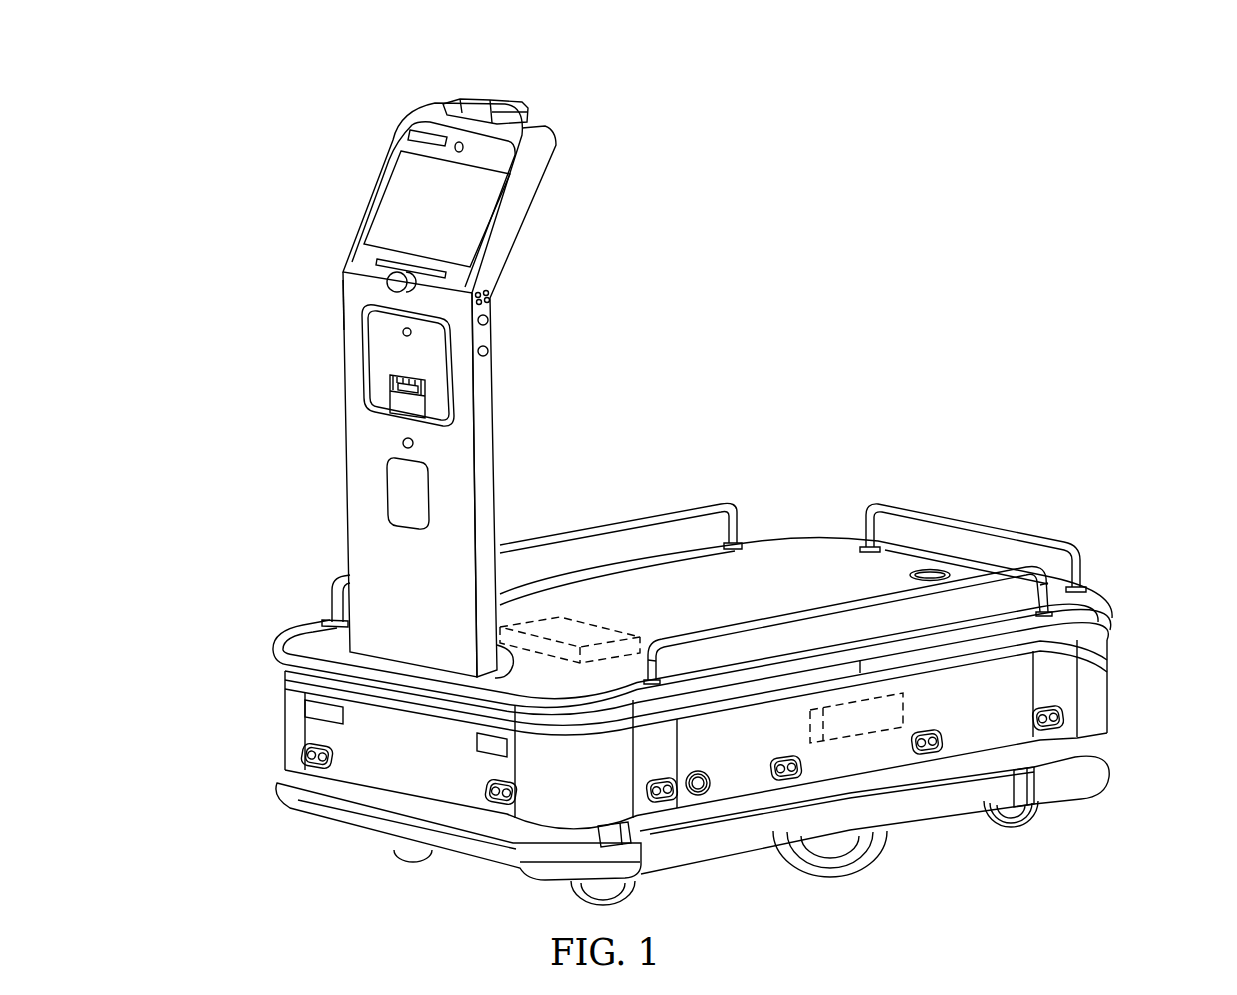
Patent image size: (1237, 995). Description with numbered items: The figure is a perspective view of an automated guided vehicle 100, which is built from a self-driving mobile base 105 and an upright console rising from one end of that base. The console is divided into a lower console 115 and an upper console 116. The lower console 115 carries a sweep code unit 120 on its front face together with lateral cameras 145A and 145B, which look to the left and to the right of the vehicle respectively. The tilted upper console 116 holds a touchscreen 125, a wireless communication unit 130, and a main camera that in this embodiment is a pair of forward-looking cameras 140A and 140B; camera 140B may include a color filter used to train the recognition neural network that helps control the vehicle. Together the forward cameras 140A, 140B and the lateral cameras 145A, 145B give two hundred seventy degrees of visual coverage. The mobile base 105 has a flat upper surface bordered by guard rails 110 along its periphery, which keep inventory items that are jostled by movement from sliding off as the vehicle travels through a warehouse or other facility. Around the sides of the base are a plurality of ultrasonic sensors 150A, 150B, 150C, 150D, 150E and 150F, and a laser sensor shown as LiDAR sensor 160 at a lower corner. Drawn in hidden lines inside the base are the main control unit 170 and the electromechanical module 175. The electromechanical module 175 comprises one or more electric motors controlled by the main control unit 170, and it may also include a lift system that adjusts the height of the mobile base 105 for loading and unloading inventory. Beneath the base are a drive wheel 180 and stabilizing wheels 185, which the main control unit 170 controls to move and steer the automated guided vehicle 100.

The automated guided vehicle 100 is at (901, 188).
The mobile base 105 is at (808, 540).
The guard rails 110 is at (970, 522).
The lower console 115 is at (497, 440).
The upper console 116 is at (533, 210).
The sweep code unit 120 is at (360, 365).
The touchscreen 125 is at (388, 212).
The wireless communication unit 130 is at (410, 134).
The camera 140A is at (458, 141).
The camera 140B is at (485, 111).
The lateral camera 145A is at (490, 350).
The lateral camera 145B is at (345, 305).
The ultrasonic sensor 150A is at (300, 754).
The ultrasonic sensor 150B is at (502, 808).
The ultrasonic sensor 150C is at (665, 778).
The ultrasonic sensor 150D is at (785, 780).
The ultrasonic sensor 150E is at (925, 755).
The ultrasonic sensor 150F is at (1065, 718).
The LiDAR sensor 160 is at (600, 822).
The main control unit 170 is at (630, 633).
The electromechanical module 175 is at (906, 717).
The drive wheel 180 is at (835, 878).
The stabilizing wheels 185 is at (1022, 828).